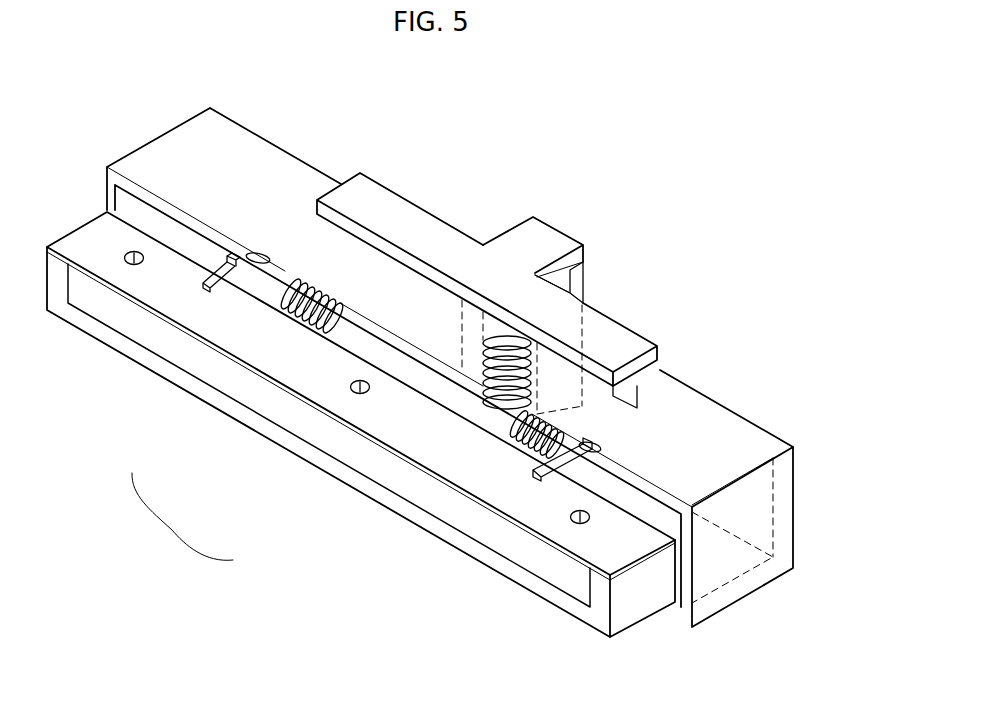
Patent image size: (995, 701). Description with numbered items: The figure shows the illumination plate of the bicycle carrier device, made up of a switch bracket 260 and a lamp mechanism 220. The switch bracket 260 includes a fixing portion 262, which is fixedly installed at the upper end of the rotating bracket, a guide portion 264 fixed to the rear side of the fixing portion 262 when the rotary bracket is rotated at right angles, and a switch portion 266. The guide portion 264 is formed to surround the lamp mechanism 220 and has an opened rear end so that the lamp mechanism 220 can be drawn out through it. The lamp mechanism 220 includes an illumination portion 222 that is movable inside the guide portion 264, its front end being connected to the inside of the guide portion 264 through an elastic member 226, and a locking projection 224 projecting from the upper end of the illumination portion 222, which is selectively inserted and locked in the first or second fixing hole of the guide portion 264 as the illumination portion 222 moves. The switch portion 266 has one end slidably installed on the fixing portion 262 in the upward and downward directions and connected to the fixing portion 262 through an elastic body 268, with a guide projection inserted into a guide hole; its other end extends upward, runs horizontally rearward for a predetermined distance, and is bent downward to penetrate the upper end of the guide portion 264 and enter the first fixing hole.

The lamp mechanism 220 is at (174, 518).
The illumination portion 222 is at (347, 448).
The locking projection 224 is at (242, 268).
The elastic member 226 is at (288, 282).
The switch bracket 260 is at (616, 273).
The fixing portion 262 is at (563, 378).
The guide portion 264 is at (737, 428).
The switch portion 266 is at (530, 248).
The elastic body 268 is at (505, 340).